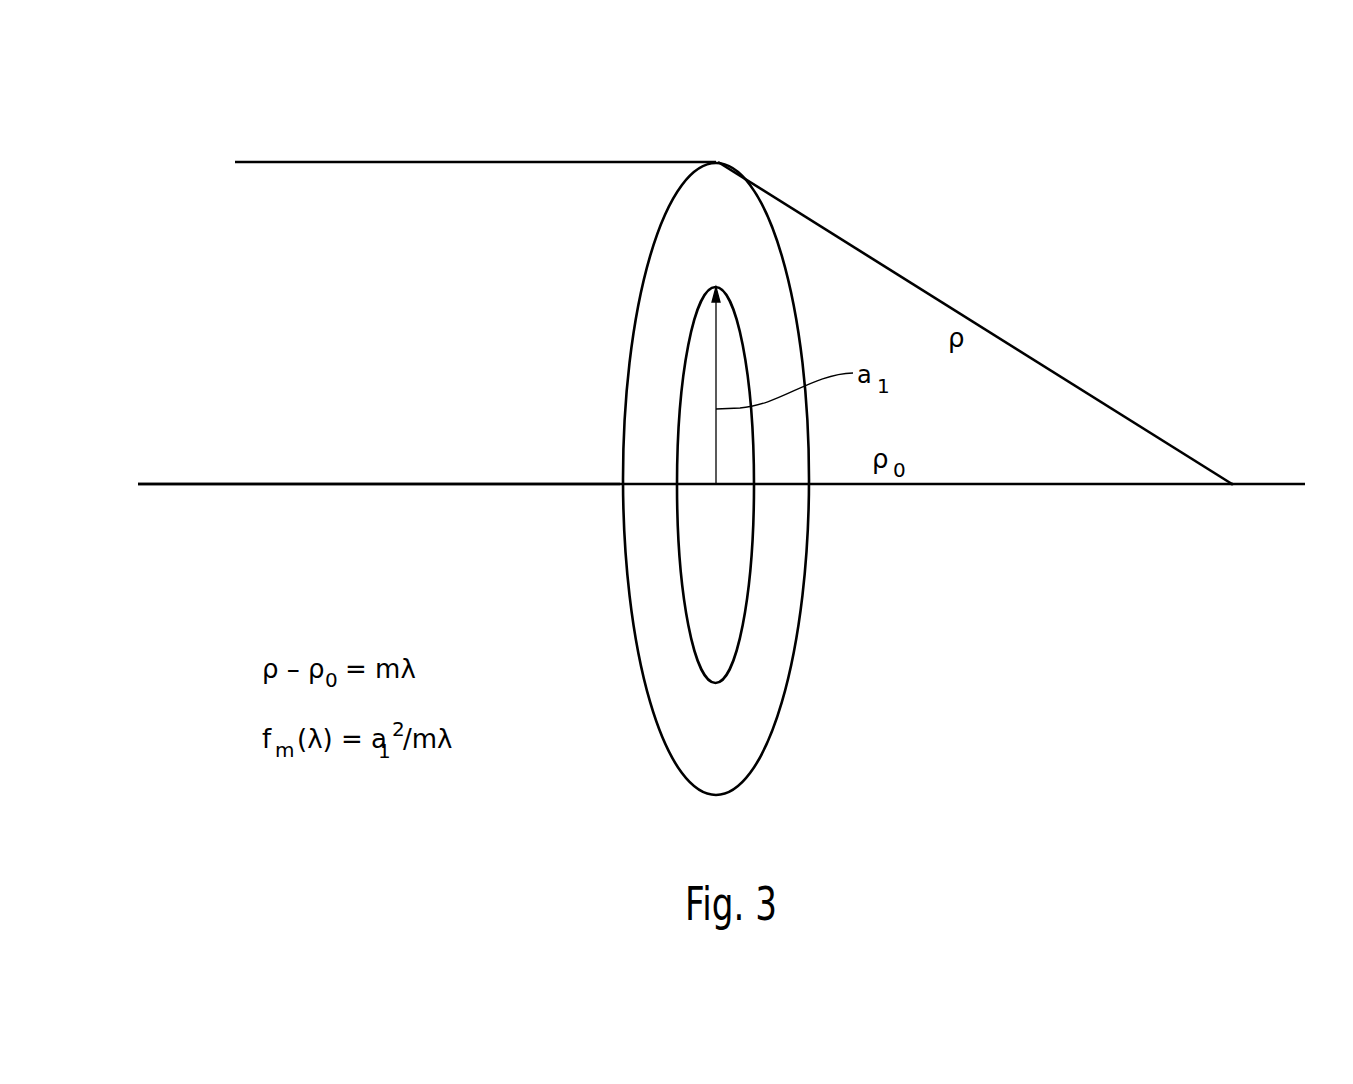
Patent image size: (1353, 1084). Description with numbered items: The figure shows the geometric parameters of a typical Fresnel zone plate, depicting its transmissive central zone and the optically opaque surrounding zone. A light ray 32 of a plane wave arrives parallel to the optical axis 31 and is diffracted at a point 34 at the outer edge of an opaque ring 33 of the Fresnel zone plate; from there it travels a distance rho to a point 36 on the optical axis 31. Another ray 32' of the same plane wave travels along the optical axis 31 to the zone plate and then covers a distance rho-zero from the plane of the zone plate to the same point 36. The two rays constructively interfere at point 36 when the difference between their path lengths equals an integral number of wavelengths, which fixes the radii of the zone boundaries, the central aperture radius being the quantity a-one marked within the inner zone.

The optical axis 31 is at (978, 487).
The light ray 32 is at (459, 134).
The axial incident ray 32' is at (366, 454).
The opaque ring 33 is at (770, 668).
The point 34 is at (729, 165).
The point 36 is at (1239, 473).